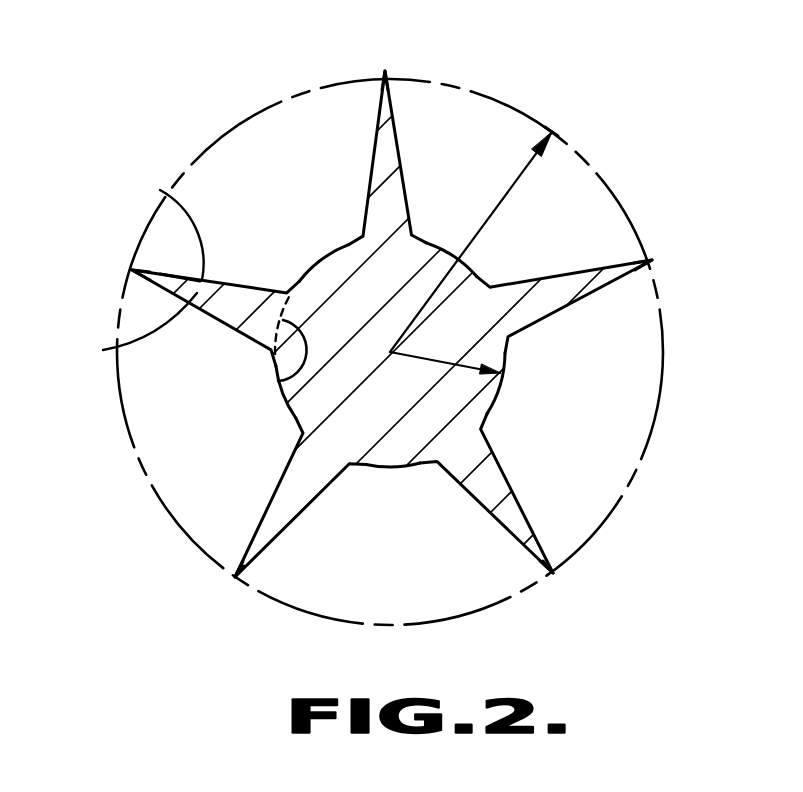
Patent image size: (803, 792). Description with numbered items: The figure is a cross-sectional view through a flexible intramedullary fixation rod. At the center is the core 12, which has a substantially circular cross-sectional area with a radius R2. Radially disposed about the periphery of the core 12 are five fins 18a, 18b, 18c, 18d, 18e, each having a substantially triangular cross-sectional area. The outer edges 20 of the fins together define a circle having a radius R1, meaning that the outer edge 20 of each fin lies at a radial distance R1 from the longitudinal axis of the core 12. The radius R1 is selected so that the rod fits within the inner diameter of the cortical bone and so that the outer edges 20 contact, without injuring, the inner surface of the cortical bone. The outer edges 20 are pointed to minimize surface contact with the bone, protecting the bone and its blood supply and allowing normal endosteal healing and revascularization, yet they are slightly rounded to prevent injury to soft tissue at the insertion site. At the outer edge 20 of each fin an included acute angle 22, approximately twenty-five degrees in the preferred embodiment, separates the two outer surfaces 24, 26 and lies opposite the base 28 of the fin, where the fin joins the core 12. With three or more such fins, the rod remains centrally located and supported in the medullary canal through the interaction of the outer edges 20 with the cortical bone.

The core 12 is at (333, 248).
The fin 18a is at (385, 137).
The fin 18b is at (566, 285).
The fin 18c is at (490, 498).
The fin 18d is at (283, 498).
The fin 18e is at (229, 316).
The outer edge 20 is at (385, 72).
The included acute angle 22 is at (188, 290).
The outer surface 24 is at (167, 195).
The outer surface 26 is at (132, 331).
The base 28 is at (278, 381).
The radius R1 is at (497, 205).
The radius R2 is at (489, 405).